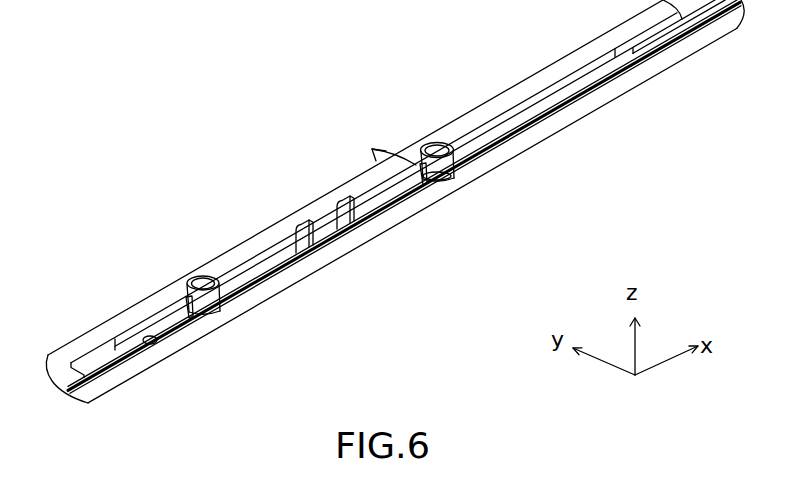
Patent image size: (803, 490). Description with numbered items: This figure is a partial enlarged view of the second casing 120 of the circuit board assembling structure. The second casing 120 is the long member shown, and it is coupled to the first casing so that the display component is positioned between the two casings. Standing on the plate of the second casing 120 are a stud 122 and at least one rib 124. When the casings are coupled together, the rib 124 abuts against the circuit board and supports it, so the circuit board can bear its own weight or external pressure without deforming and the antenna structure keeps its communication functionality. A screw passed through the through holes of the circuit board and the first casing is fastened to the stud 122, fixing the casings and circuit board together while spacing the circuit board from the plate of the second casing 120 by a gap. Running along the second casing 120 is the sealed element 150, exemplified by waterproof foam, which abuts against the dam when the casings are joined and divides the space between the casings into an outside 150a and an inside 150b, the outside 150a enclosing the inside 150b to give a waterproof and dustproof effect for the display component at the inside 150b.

The second casing 120 is at (527, 150).
The stud 122 is at (207, 302).
The rib 124 is at (310, 243).
The sealed element 150 is at (145, 316).
The outside 150a is at (157, 344).
The inside 150b is at (436, 174).